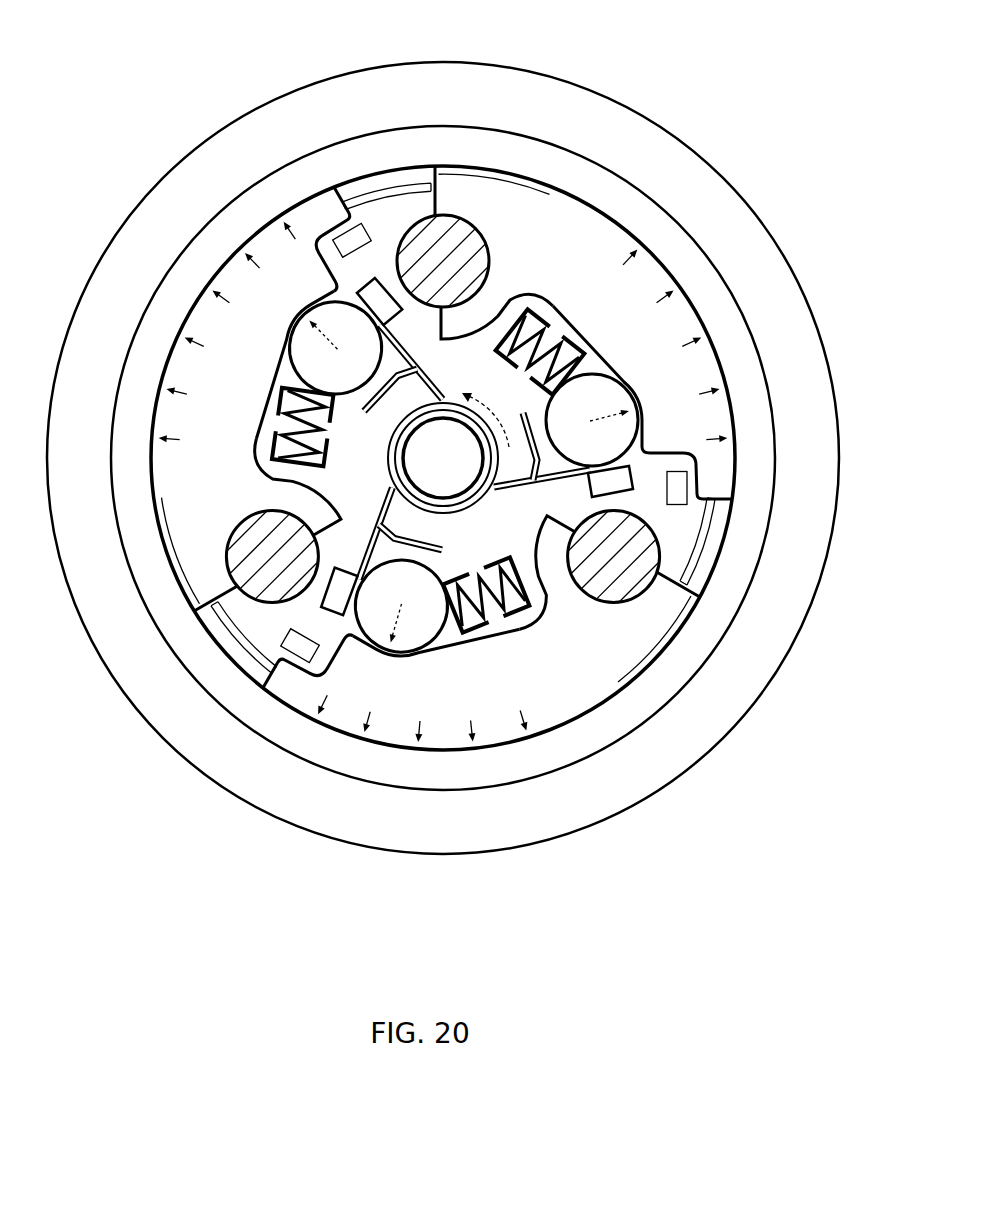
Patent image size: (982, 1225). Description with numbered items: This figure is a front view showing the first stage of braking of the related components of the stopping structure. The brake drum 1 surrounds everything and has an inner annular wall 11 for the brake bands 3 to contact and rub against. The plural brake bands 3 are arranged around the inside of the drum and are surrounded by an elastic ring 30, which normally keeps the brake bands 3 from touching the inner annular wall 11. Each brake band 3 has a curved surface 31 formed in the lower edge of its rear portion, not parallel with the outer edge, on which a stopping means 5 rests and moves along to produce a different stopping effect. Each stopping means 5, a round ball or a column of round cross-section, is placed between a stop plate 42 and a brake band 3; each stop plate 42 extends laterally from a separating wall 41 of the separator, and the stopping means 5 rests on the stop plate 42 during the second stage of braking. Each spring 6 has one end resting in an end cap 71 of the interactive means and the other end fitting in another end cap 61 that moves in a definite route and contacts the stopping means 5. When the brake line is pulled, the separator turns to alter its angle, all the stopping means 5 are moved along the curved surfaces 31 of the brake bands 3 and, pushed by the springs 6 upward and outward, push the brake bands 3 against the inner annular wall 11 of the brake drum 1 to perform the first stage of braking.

The brake drum 1 is at (737, 187).
The brake band 3 is at (583, 227).
The stopping means 5 is at (600, 416).
The spring 6 is at (290, 407).
The inner annular wall 11 is at (352, 178).
The elastic ring 30 is at (390, 190).
The curved surface 31 is at (620, 397).
The separating wall 41 is at (607, 492).
The stop plate 42 is at (377, 408).
The end cap 61 is at (285, 380).
The end cap 71 is at (283, 463).